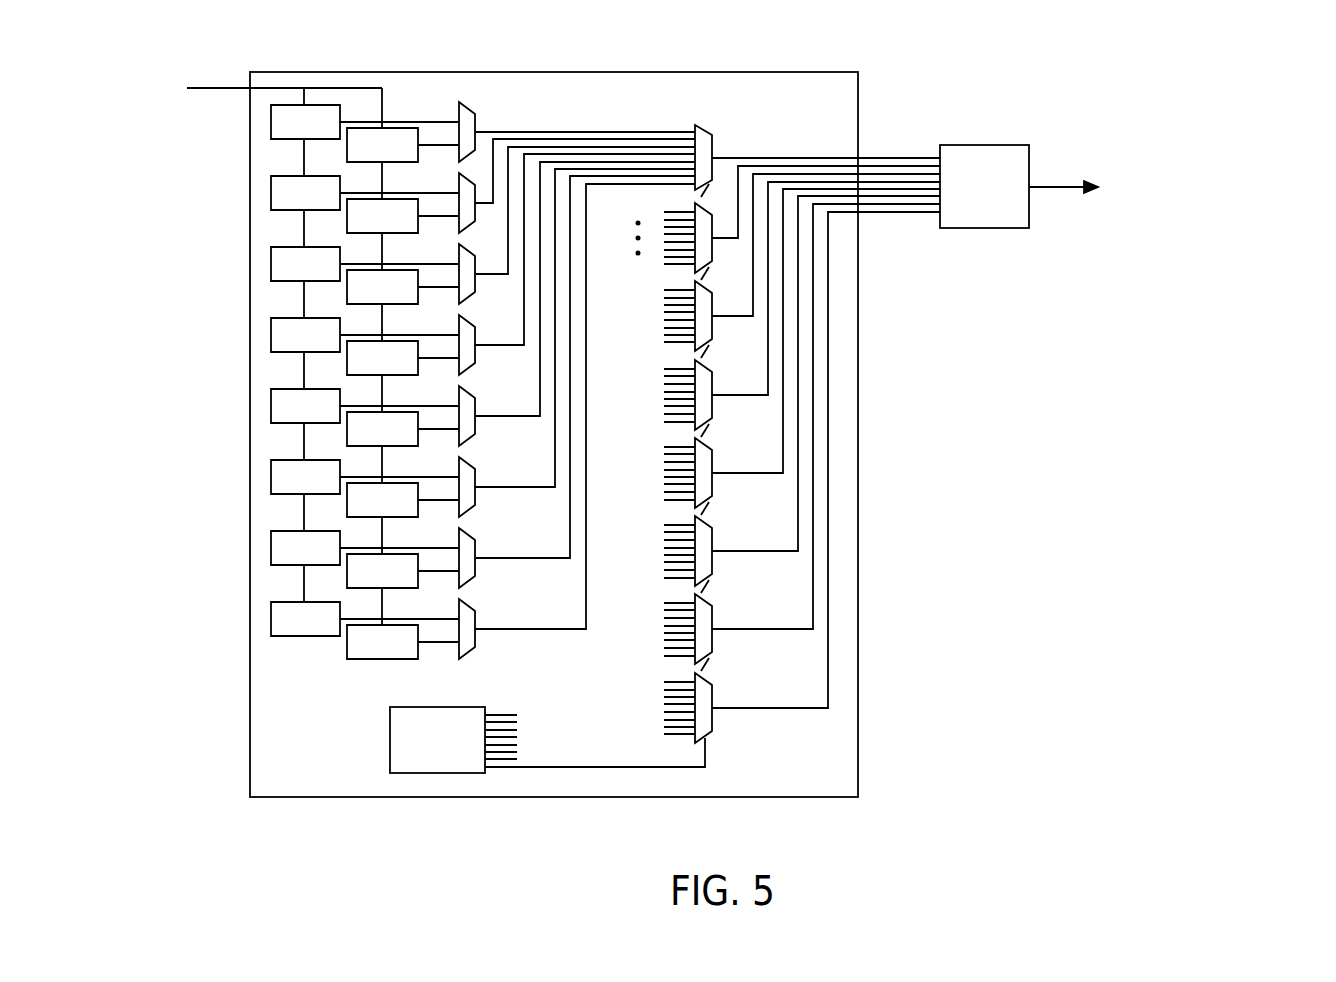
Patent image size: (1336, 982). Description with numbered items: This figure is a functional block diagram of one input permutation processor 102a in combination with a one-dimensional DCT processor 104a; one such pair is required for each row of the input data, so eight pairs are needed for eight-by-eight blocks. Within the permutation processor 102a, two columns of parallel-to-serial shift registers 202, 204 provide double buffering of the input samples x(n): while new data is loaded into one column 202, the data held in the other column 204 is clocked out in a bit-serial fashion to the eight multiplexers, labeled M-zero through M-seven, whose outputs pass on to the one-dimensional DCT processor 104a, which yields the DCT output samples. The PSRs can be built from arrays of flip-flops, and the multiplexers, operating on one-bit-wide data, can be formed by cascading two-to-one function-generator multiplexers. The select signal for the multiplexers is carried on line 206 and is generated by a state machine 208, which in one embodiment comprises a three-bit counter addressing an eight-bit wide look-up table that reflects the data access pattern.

The permutation processor 102a is at (250, 184).
The 1-D DCT processor 104a is at (977, 145).
The column of parallel-to-serial shift registers 202 is at (305, 652).
The column of parallel-to-serial shift registers 204 is at (378, 673).
The select signal line 206 is at (703, 741).
The state machine 208 is at (439, 707).